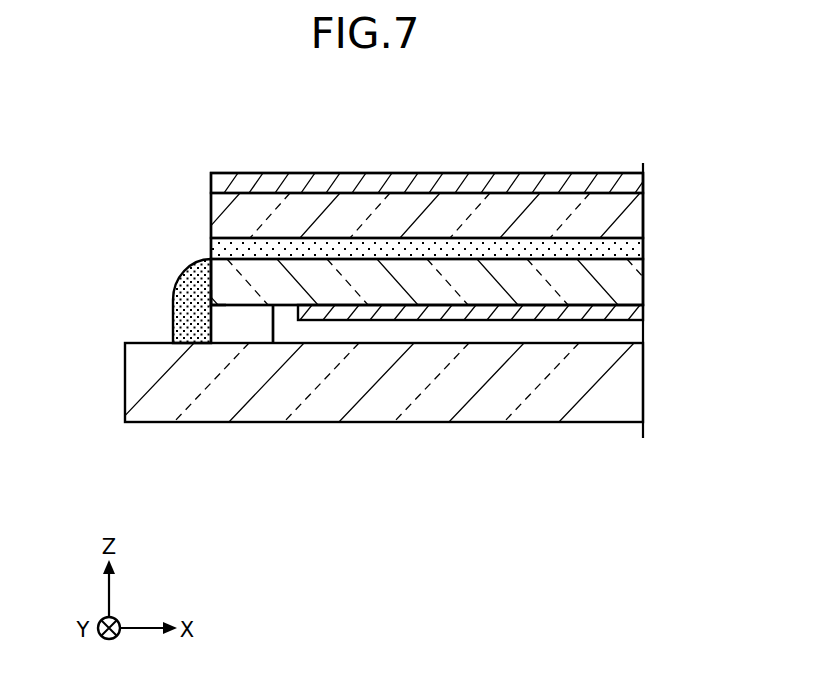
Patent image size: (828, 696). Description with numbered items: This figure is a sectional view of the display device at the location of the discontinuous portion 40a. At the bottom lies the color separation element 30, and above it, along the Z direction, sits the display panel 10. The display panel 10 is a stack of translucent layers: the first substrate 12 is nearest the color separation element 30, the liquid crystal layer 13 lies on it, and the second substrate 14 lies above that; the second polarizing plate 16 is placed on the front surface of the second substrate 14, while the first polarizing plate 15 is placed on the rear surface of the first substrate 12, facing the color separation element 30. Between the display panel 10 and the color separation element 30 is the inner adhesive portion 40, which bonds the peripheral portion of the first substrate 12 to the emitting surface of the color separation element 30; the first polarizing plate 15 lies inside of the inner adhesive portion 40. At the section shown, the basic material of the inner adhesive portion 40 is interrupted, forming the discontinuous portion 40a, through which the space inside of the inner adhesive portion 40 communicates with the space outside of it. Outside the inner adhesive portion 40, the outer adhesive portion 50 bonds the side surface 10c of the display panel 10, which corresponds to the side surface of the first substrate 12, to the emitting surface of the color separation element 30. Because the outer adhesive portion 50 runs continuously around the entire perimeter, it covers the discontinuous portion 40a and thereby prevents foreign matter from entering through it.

The display panel 10 is at (262, 165).
The second polarizing plate 16 is at (211, 183).
The second substrate 14 is at (211, 216).
The liquid crystal layer 13 is at (211, 249).
The first substrate 12 is at (203, 282).
The first polarizing plate 15 is at (460, 321).
The side surface 10c is at (211, 300).
The outer adhesive portion 50 is at (173, 318).
The discontinuous portion 40a is at (246, 331).
The inner adhesive portion 40 is at (284, 334).
The color separation element 30 is at (116, 385).